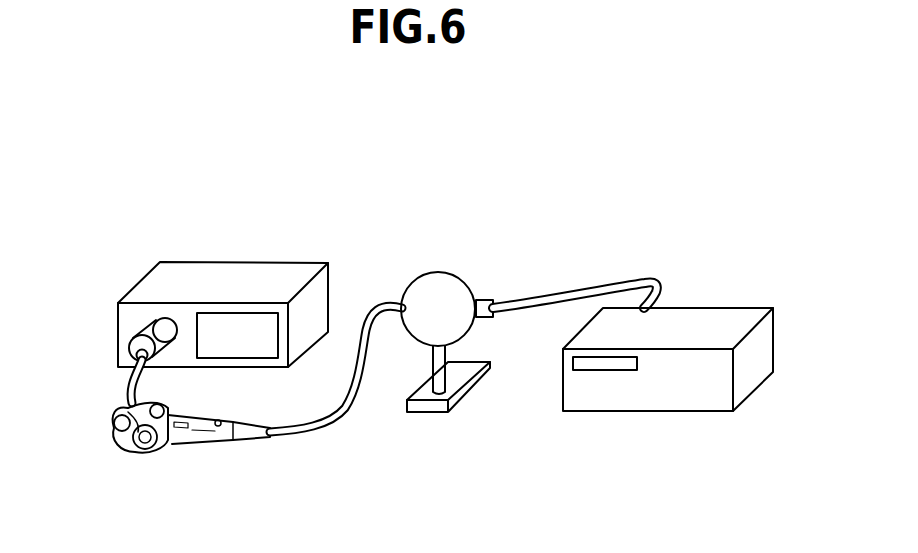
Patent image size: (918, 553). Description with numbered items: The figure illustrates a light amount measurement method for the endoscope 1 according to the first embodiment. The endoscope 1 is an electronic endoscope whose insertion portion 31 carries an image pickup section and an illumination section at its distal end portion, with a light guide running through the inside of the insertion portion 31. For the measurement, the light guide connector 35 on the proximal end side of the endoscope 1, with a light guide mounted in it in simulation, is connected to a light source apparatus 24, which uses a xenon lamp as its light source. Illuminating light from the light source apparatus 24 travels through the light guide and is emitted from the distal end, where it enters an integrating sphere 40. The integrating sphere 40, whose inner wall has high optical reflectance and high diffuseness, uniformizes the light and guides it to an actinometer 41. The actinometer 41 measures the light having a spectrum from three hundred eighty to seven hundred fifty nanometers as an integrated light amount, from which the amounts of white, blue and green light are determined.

The endoscope 1 is at (188, 443).
The light source apparatus 24 is at (237, 262).
The insertion portion 31 is at (330, 430).
The light guide connector 35 is at (143, 330).
The integrating sphere 40 is at (464, 282).
The actinometer 41 is at (703, 308).